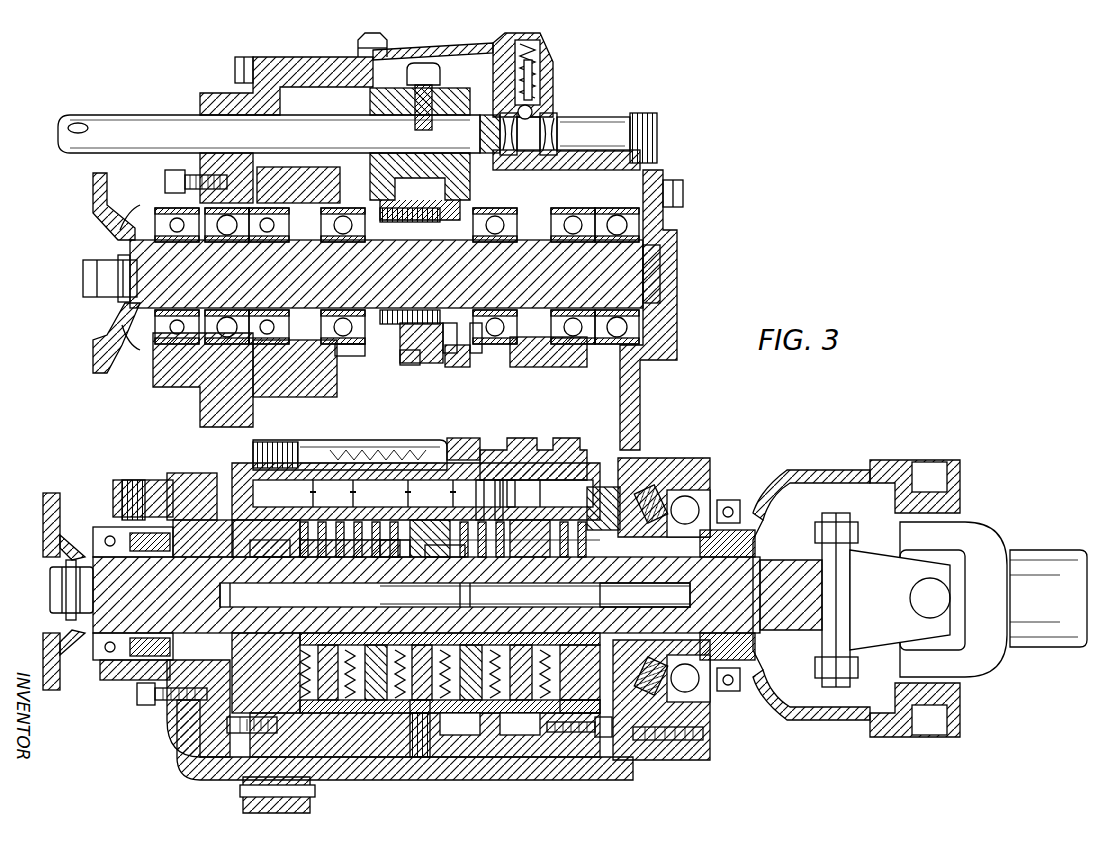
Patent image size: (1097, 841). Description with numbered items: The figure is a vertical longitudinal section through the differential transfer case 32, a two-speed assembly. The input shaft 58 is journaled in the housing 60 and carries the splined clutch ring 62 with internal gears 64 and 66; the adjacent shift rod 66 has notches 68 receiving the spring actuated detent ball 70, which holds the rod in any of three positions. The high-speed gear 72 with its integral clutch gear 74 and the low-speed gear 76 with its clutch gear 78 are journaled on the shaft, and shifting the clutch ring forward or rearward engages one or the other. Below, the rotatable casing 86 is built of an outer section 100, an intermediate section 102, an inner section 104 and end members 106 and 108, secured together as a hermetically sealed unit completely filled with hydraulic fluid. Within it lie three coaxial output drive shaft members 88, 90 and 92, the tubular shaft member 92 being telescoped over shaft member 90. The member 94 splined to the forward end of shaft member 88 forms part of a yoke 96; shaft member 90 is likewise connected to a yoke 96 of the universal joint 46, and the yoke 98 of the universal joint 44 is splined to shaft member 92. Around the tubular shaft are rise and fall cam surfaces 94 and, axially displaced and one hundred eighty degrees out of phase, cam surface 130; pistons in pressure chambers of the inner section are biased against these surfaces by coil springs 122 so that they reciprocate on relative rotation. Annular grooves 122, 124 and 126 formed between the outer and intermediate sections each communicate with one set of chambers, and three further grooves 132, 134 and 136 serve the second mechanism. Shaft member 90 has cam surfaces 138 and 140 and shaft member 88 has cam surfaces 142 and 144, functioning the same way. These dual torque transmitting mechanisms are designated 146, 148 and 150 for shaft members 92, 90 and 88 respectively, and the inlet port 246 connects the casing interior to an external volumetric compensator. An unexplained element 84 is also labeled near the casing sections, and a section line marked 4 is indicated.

The differential transfer case 32 is at (719, 163).
The universal joint 44 is at (895, 462).
The universal joint 46 is at (988, 676).
The input shaft 58 is at (655, 267).
The housing 60 is at (180, 470).
The clutch ring 62 is at (440, 368).
The internal gear 64 is at (455, 353).
The shift rod 66 is at (160, 115).
The notches 68 is at (550, 121).
The detent ball 70 is at (536, 109).
The high-speed gear 72 is at (318, 392).
The clutch gear 74 is at (348, 356).
The low-speed gear 76 is at (535, 365).
The clutch gear 78 is at (478, 350).
The clutch plate 84 is at (522, 440).
The rotatable casing 86 is at (430, 440).
The output drive shaft member 88 is at (60, 618).
The output drive shaft member 90 is at (415, 607).
The output drive shaft member 92 is at (548, 578).
The rise and fall cam surfaces 94 is at (43, 513).
The yoke 96 is at (838, 515).
The yoke 98 is at (770, 470).
The outer section 100 is at (395, 440).
The intermediate section 102 is at (592, 487).
The inner section 104 is at (650, 609).
The end member 106 is at (652, 775).
The end member 108 is at (232, 480).
The annular groove 122 is at (500, 768).
The annular groove 124 is at (570, 745).
The annular groove 126 is at (600, 745).
The cam surface 130 is at (488, 557).
The annular groove 132 is at (480, 458).
The annular groove 134 is at (500, 458).
The annular groove 136 is at (533, 459).
The cam surface 138 is at (405, 540).
The cam surface 140 is at (440, 552).
The cam surface 142 is at (290, 545).
The cam surface 144 is at (352, 545).
The dual torque transmitting mechanisms 146 is at (570, 573).
The dual torque transmitting mechanisms 148 is at (455, 595).
The dual torque transmitting mechanisms 150 is at (238, 594).
The inlet port 246 is at (135, 480).
The section line 4 is at (534, 430).